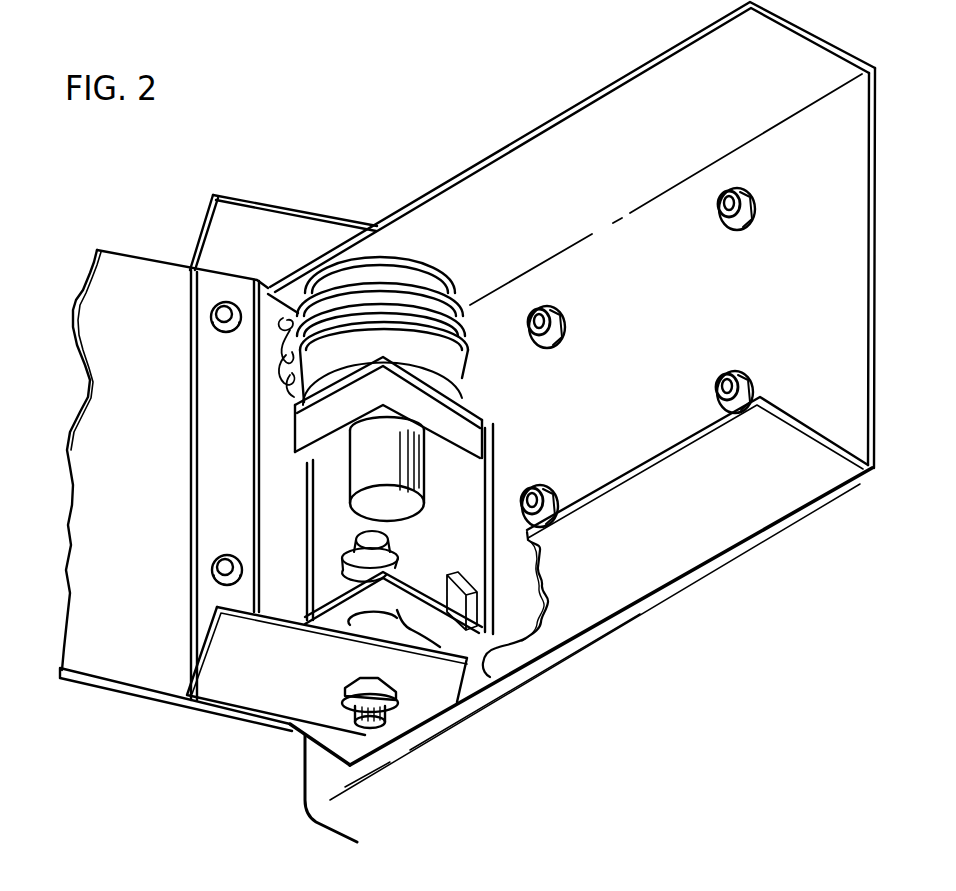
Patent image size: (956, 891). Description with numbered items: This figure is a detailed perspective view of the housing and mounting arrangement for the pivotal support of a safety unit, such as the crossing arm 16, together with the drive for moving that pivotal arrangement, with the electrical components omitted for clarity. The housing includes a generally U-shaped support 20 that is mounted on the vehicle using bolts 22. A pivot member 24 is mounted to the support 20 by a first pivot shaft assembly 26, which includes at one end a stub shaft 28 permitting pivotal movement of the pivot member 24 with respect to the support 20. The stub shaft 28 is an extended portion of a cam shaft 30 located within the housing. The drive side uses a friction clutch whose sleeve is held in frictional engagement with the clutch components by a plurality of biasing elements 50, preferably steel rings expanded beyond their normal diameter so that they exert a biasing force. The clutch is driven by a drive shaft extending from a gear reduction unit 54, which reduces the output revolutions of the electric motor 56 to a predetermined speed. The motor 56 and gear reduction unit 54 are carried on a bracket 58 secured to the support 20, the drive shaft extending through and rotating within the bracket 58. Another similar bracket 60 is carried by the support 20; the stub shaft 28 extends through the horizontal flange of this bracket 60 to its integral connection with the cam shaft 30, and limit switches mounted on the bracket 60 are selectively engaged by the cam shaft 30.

The crossing arm 16 is at (147, 278).
The U-shaped support 20 is at (603, 115).
The bolts 22 is at (558, 325).
The pivot member 24 is at (323, 233).
The first pivot shaft assembly 26 is at (256, 696).
The stub shaft 28 is at (305, 745).
The cam shaft 30 is at (390, 568).
The biasing elements 50 is at (462, 353).
The gear reduction unit 54 is at (477, 437).
The electric motor 56 is at (404, 498).
The bracket 58 is at (483, 403).
The bracket 60 is at (488, 678).